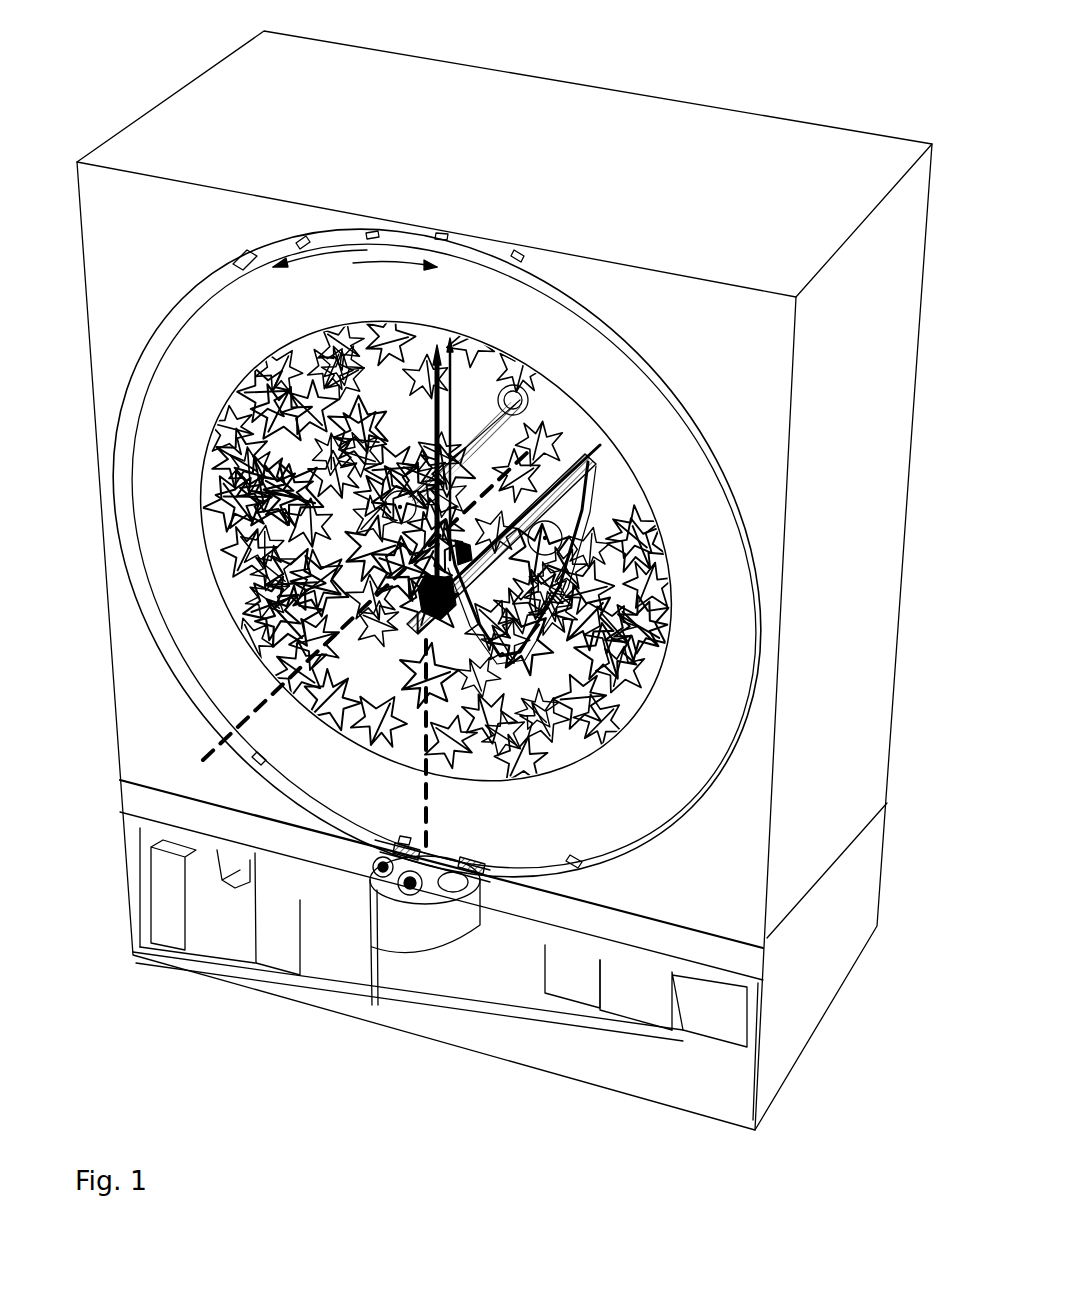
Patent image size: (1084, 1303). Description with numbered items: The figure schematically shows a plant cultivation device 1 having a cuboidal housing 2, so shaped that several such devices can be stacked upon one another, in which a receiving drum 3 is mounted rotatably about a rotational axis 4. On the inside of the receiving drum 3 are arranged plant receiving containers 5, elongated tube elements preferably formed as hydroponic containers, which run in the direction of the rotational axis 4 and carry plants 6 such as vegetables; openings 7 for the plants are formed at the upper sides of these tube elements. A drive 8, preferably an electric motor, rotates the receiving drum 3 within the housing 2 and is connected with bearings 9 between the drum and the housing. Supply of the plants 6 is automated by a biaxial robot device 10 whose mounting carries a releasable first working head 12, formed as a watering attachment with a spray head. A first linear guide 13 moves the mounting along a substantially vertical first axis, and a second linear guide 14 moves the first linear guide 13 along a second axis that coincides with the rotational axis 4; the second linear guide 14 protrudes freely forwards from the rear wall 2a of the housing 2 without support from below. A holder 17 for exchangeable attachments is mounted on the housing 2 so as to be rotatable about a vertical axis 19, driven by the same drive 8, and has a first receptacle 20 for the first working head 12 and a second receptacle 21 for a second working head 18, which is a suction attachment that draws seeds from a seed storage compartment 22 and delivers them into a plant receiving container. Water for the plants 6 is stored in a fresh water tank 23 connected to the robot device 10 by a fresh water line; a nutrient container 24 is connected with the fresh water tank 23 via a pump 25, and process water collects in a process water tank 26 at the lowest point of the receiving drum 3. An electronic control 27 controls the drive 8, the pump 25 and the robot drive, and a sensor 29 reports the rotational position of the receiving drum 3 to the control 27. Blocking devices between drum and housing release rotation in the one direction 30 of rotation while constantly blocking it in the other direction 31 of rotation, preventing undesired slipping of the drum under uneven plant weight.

The plant cultivation device 1 is at (547, 1100).
The housing 2 is at (652, 122).
The rear wall 2a is at (468, 383).
The receiving drum 3 is at (720, 543).
The rotational axis 4 is at (523, 457).
The plant receiving containers 5 is at (228, 595).
The plants 6 is at (252, 371).
The openings 7 is at (313, 707).
The drive 8 is at (725, 1013).
The bearings 9 is at (240, 262).
The robot device 10 is at (493, 515).
The first working head 12 is at (412, 912).
The first linear guide 13 is at (421, 576).
The second linear guide 14 is at (570, 463).
The holder for exchangeable attachments 17 is at (440, 928).
The second working head 18 is at (373, 873).
The vertical axis 19 is at (423, 787).
The first receptacle 20 is at (402, 897).
The second receptacle 21 is at (373, 878).
The seed storage compartment 22 is at (458, 892).
The fresh water tank 23 is at (265, 957).
The nutrient container 24 is at (162, 928).
The pump 25 is at (220, 895).
The process water tank 26 is at (382, 943).
The control 27 is at (593, 993).
The sensor 29 is at (575, 858).
The one direction of rotation 30 is at (398, 258).
The other direction of rotation 31 is at (333, 250).